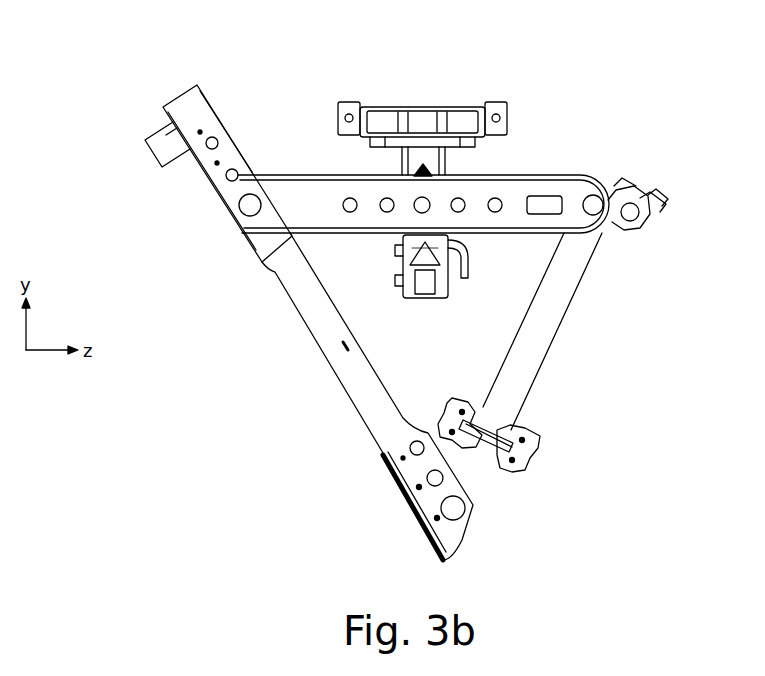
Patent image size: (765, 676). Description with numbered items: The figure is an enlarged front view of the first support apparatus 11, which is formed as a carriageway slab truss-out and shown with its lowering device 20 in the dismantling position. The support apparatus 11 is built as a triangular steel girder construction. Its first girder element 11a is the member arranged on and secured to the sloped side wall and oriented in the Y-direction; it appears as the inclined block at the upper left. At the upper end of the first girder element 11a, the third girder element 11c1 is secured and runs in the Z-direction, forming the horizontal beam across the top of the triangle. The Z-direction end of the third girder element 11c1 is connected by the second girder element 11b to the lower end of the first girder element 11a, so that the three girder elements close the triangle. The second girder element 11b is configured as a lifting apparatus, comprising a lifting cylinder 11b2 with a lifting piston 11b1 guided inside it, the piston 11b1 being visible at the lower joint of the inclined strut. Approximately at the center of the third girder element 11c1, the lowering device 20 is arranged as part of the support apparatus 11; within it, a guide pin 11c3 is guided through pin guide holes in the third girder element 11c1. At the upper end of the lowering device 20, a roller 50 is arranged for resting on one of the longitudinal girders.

The first support apparatus 11 is at (652, 118).
The first girder element 11a is at (193, 124).
The second girder element 11b is at (560, 352).
The lifting piston 11b1 is at (470, 478).
The lifting cylinder 11b2 is at (567, 272).
The third girder element 11c1 is at (308, 176).
The guide pin 11c3 is at (428, 200).
The lowering device 20 is at (327, 92).
The roller 50 is at (422, 118).